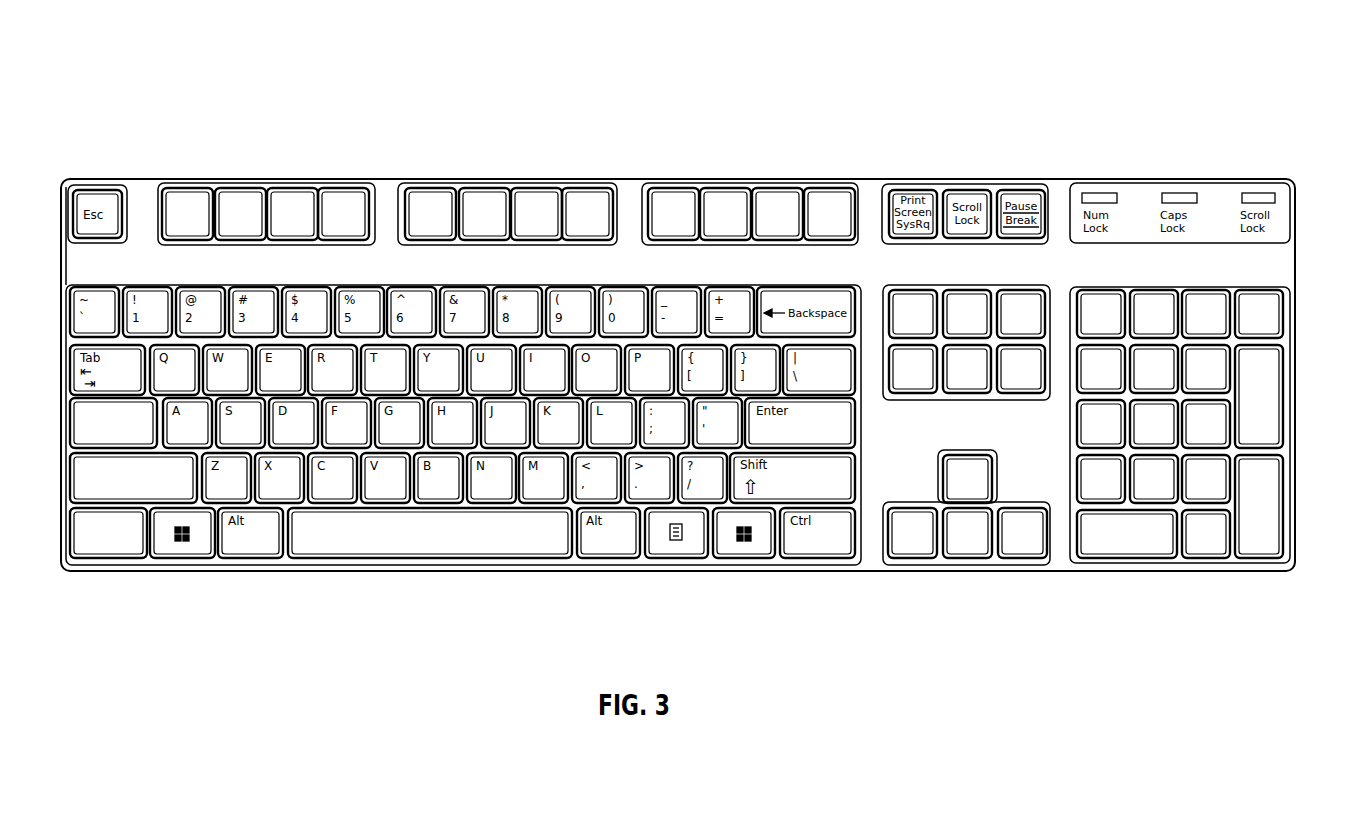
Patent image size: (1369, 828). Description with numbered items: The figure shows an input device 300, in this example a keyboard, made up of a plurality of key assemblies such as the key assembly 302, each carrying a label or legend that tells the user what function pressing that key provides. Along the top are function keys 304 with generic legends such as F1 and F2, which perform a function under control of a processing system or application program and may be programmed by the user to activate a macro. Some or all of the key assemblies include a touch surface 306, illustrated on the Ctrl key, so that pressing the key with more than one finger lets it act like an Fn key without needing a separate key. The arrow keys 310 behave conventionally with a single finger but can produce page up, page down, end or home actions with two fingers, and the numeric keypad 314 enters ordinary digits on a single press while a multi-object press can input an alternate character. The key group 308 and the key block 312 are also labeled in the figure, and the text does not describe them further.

The input device 300 is at (1202, 66).
The key assembly 302 is at (143, 437).
The function keys 304 is at (163, 178).
The touch surface 306 is at (90, 545).
The shift key 308 is at (122, 492).
The arrow keys 310 is at (1050, 575).
The navigation keys 312 is at (1050, 403).
The numeric keypad 314 is at (1302, 287).